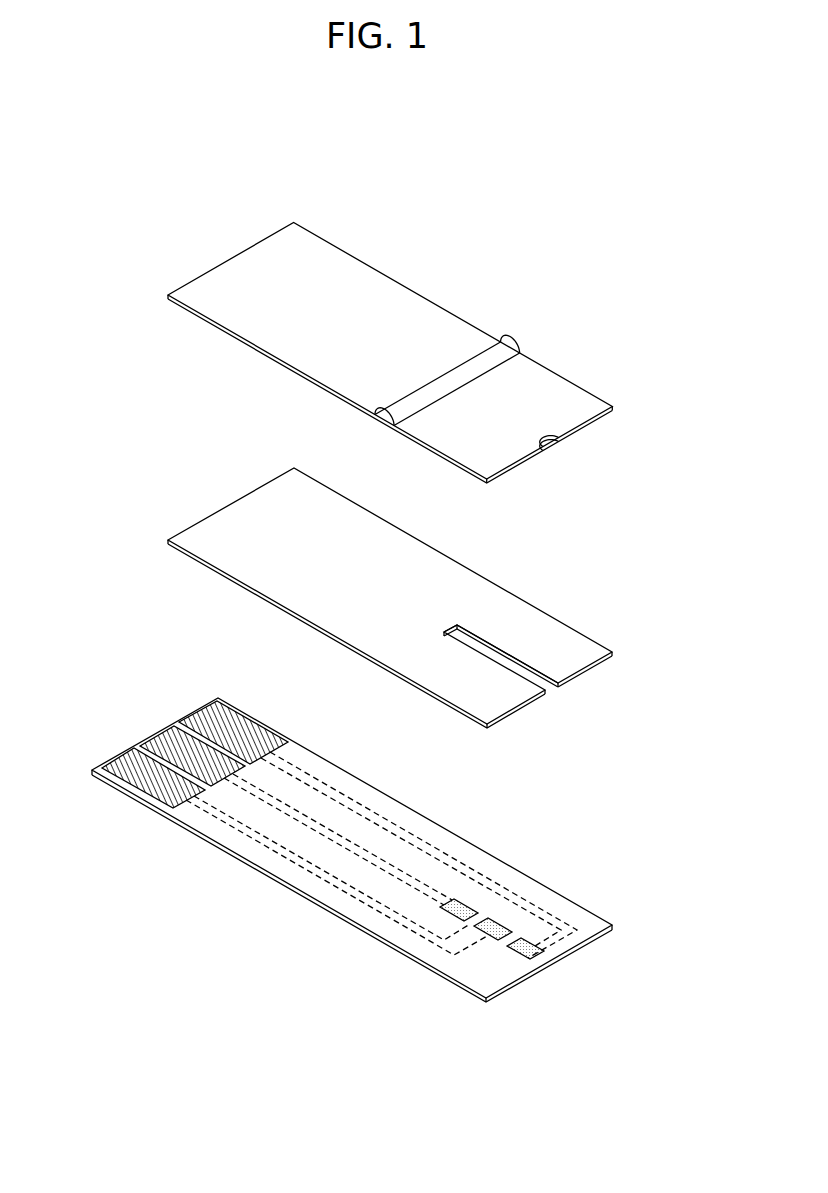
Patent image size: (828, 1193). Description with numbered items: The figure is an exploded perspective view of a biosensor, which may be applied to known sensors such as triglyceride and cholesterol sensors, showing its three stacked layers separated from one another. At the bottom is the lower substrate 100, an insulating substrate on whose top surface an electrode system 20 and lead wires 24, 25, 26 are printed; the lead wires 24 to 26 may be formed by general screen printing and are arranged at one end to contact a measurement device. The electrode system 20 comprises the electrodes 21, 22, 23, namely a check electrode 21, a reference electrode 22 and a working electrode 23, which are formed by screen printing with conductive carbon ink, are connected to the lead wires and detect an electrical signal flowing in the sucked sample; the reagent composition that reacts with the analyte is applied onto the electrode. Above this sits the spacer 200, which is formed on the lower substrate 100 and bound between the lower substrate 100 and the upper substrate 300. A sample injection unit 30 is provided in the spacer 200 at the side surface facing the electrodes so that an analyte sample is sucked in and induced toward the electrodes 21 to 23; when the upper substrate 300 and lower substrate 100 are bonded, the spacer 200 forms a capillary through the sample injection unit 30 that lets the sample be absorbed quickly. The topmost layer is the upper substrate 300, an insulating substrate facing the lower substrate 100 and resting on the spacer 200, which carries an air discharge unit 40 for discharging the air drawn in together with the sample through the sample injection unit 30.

The lower substrate 100 is at (585, 917).
The spacer 200 is at (563, 630).
The upper substrate 300 is at (567, 390).
The air discharge unit 40 is at (507, 345).
The sample injection unit 30 is at (546, 690).
The electrode system 20 is at (453, 969).
The check electrode 21 is at (456, 912).
The reference electrode 22 is at (494, 937).
The working electrode 23 is at (524, 952).
The lead wire 24 is at (114, 762).
The lead wire 25 is at (162, 738).
The lead wire 26 is at (205, 720).